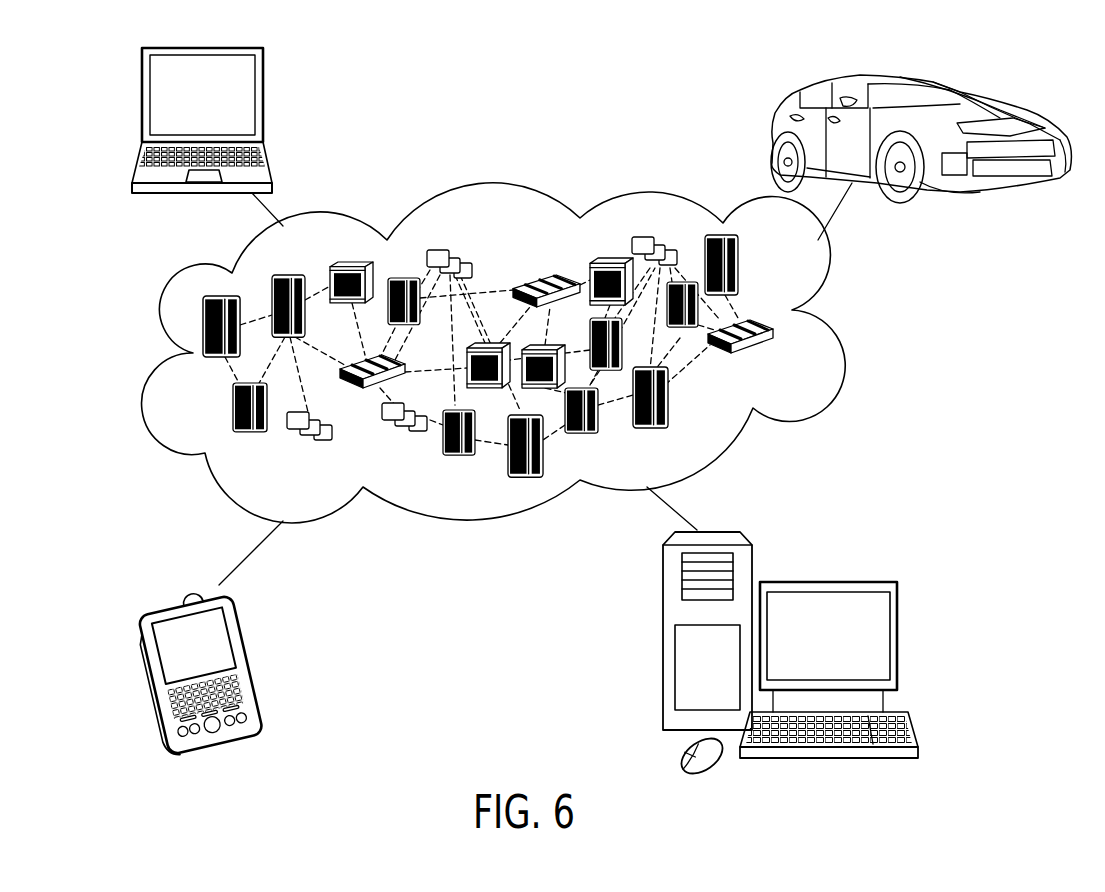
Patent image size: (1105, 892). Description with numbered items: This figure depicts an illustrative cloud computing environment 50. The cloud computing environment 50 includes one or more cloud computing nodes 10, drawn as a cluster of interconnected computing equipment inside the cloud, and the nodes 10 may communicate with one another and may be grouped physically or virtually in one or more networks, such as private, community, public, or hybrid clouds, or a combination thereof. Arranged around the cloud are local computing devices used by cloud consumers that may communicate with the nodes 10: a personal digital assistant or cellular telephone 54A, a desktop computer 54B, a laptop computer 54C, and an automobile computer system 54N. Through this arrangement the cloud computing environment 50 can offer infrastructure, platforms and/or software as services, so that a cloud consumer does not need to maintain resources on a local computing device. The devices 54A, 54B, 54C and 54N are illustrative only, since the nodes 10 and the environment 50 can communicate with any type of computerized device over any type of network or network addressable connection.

The cloud computing node 10 is at (800, 366).
The cloud computing environment 50 is at (842, 347).
The personal digital assistant or cellular telephone 54A is at (250, 657).
The desktop computer 54B is at (858, 582).
The laptop computer 54C is at (263, 112).
The automobile computer system 54N is at (973, 103).